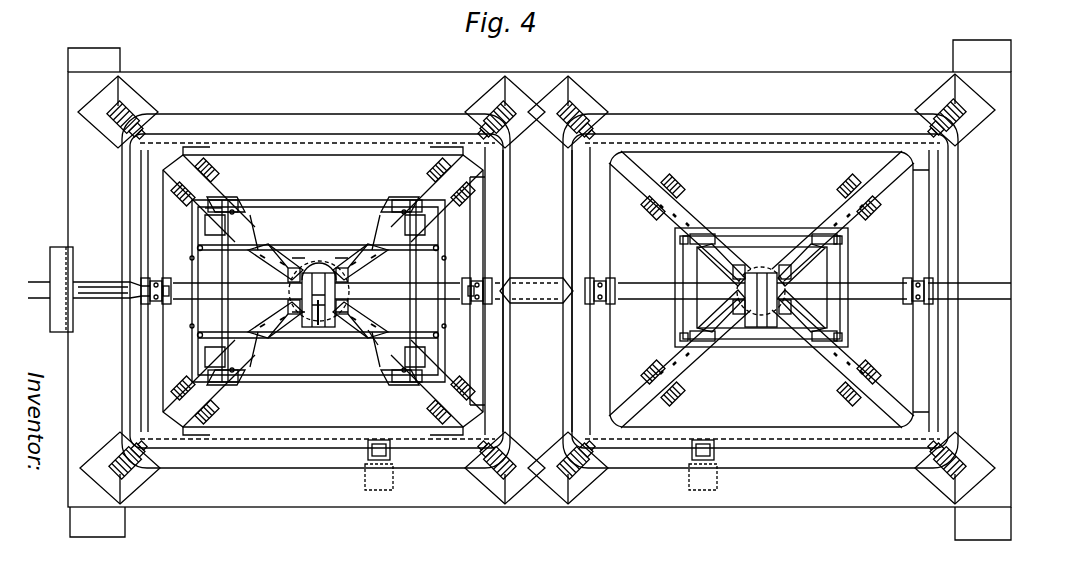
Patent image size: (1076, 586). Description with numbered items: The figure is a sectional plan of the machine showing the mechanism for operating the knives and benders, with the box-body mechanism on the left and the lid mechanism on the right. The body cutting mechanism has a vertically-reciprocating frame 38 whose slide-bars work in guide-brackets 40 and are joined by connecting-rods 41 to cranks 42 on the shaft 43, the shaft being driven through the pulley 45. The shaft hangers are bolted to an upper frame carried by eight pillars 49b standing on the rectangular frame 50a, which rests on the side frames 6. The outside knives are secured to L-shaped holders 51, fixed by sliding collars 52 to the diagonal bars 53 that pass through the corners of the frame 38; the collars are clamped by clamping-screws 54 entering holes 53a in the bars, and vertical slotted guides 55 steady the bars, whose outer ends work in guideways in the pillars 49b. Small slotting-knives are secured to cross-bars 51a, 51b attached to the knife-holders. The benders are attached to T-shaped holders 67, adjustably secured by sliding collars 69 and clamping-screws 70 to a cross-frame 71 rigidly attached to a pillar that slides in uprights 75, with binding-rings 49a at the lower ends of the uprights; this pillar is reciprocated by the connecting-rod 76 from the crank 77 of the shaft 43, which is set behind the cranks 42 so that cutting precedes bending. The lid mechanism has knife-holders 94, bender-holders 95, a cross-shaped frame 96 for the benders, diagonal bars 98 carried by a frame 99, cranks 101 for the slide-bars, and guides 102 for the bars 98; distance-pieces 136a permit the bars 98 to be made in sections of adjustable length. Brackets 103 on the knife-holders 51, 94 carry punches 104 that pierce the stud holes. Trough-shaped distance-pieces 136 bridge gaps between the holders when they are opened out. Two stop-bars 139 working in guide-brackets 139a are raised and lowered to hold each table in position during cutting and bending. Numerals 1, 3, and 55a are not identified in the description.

The frame column 1 is at (537, 291).
The frame track 3 is at (376, 146).
The side frames 6 is at (539, 290).
The vertically-reciprocating frame 38 is at (290, 146).
The guide-brackets 40 is at (80, 290).
The connecting-rods 41 is at (166, 304).
The cranks 42 is at (165, 278).
The shaft 43 is at (30, 290).
The pulley 45 is at (58, 256).
The binding-rings 49a is at (320, 262).
The pillars 49b is at (135, 110).
The rectangular frame 50a is at (539, 289).
The holders 51 is at (366, 205).
The cross-bar 51a is at (323, 291).
The cross-bar 51b is at (258, 248).
The sliding collars 52 is at (232, 200).
The diagonal bars 53 is at (190, 156).
The holes 53a is at (240, 362).
The clamping-screws 54 is at (222, 198).
The vertical slotted guides 55 is at (222, 158).
The screw plate 55a is at (220, 215).
The holders 67 is at (384, 343).
The sliding collars 69 is at (812, 354).
The clamping-screws 70 is at (268, 250).
The cross-frame 71 is at (270, 318).
The uprights 75 is at (344, 346).
The connecting-rod 76 is at (320, 328).
The crank 77 is at (322, 330).
The knife-holders 94 is at (796, 232).
The bender-holders 95 is at (748, 262).
The cross-shaped frame 96 is at (760, 272).
The diagonal bars 98 is at (638, 196).
The frame 99 is at (738, 146).
The cranks 101 is at (600, 304).
The guides 102 is at (684, 188).
The brackets 103 is at (192, 260).
The punches 104 is at (198, 248).
The distance-pieces 136 is at (322, 205).
The distance-pieces 136a is at (638, 186).
The stop-bars 139 is at (368, 458).
The guide-brackets 139a is at (392, 470).